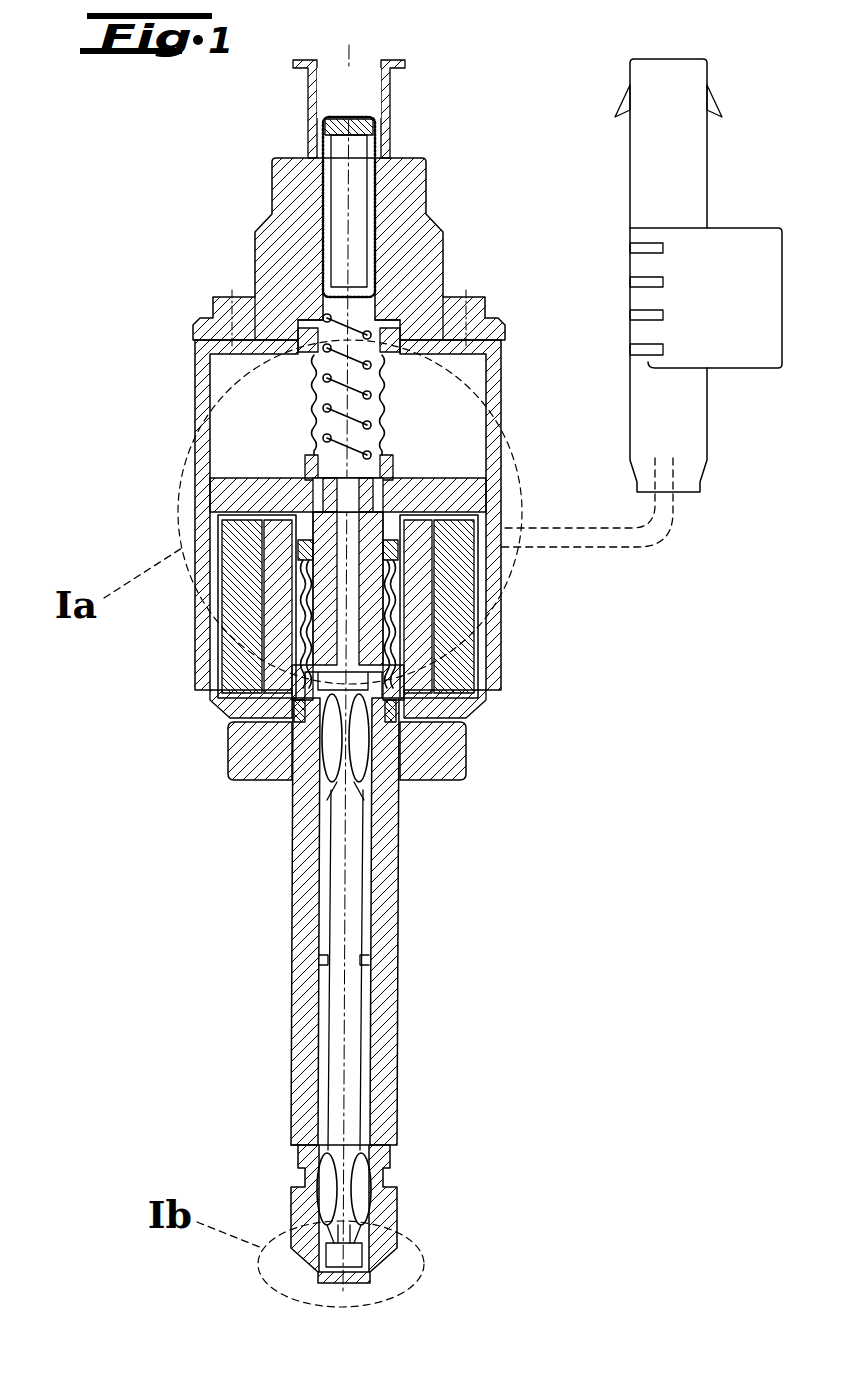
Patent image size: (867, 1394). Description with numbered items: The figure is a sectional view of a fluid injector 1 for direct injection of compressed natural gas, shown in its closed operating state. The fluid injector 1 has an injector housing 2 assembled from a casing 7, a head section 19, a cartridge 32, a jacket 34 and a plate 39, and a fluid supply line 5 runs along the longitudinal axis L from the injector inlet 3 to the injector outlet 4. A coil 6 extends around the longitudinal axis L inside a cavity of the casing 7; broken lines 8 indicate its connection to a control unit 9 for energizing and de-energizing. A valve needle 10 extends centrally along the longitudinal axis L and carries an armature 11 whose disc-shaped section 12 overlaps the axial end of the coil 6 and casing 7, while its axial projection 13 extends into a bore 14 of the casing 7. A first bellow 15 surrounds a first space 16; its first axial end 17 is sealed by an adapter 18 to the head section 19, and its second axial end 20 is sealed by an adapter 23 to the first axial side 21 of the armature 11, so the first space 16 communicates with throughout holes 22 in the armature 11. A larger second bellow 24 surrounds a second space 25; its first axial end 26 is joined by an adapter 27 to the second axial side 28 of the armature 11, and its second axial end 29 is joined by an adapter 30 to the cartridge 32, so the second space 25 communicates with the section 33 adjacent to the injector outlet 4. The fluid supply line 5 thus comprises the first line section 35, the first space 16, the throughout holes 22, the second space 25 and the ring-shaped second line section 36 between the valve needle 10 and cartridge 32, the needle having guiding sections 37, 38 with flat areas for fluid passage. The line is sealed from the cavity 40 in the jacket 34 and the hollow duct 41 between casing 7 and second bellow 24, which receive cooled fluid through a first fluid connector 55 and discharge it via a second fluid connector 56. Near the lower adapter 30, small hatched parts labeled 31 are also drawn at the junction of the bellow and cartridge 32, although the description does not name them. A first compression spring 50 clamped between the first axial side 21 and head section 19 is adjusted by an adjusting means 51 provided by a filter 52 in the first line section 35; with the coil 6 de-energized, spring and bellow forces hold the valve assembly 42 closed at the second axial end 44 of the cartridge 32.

The fluid injector 1 is at (144, 166).
The injector housing 2 is at (410, 260).
The injector inlet 3 is at (400, 68).
The injector outlet 4 is at (362, 1272).
The fluid supply line 5 is at (438, 342).
The coil 6 is at (440, 632).
The casing 7 is at (470, 650).
The lines 8 is at (627, 532).
The control unit 9 is at (690, 416).
The valve needle 10 is at (352, 845).
The armature 11 is at (470, 485).
The disc-shaped section 12 is at (212, 490).
The axial projection 13 is at (225, 528).
The bore 14 is at (470, 590).
The first bellow 15 is at (436, 386).
The first space 16 is at (205, 385).
The first axial end 17 is at (483, 373).
The adapter 18 is at (205, 377).
The head section 19 is at (405, 200).
The second axial end 20 is at (314, 425).
The first axial side 21 is at (205, 472).
The throughout holes 22 is at (340, 572).
The adapter 23 is at (392, 462).
The second bellow 24 is at (268, 682).
The second space 25 is at (318, 656).
The first axial end 26 is at (300, 548).
The adapter 27 is at (395, 505).
The second axial side 28 is at (318, 500).
The second axial end 29 is at (485, 690).
The adapter 30 is at (470, 740).
The guide ring 31 is at (298, 698).
The cartridge 32 is at (306, 1102).
The section 33 is at (365, 1102).
The jacket 34 is at (205, 432).
The first line section 35 is at (372, 97).
The second line section 36 is at (320, 1012).
The guiding section 37 is at (300, 822).
The guiding section 38 is at (330, 1178).
The plate 39 is at (240, 762).
The cavity 40 is at (435, 416).
The hollow duct 41 is at (305, 590).
The valve assembly 42 is at (392, 1278).
The second axial end 44 is at (293, 1255).
The first compression spring 50 is at (340, 332).
The adjusting means 51 is at (322, 200).
The filter 52 is at (349, 211).
The first fluid connector 55 is at (222, 307).
The second fluid connector 56 is at (478, 307).
The longitudinal axis L is at (348, 1092).